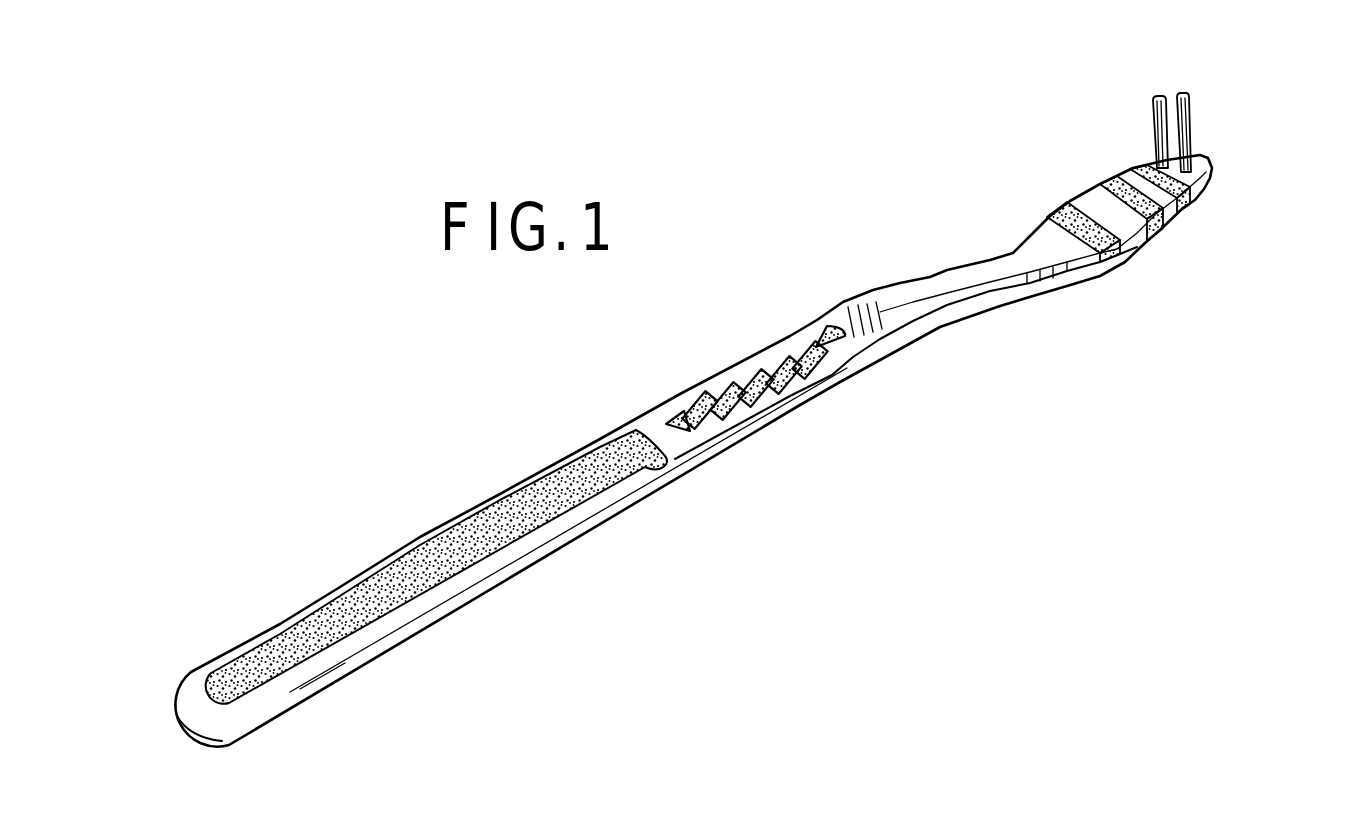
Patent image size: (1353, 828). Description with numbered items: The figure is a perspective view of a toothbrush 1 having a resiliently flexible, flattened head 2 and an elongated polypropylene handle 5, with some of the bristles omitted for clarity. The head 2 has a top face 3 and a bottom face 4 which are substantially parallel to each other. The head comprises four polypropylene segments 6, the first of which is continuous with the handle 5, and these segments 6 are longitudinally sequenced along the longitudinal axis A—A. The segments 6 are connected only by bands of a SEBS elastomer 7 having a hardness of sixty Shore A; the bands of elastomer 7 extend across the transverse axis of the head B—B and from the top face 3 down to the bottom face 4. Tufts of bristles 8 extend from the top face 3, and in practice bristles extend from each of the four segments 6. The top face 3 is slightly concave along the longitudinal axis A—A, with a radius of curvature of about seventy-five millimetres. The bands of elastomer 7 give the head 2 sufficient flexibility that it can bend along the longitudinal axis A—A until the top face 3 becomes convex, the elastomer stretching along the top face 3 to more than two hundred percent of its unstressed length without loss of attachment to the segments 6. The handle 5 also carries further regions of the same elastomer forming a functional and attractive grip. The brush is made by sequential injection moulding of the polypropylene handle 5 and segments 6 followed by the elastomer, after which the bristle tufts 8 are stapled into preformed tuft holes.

The toothbrush 1 is at (775, 482).
The head 2 is at (1016, 199).
The top face 3 is at (1115, 134).
The bottom face 4 is at (1207, 210).
The handle 5 is at (470, 517).
The segments 6 is at (1072, 200).
The bands of elastomer 7 is at (1113, 272).
The tufts of bristles 8 is at (1187, 92).
The longitudinal axis A is at (1223, 153).
The transverse axis B is at (1006, 139).